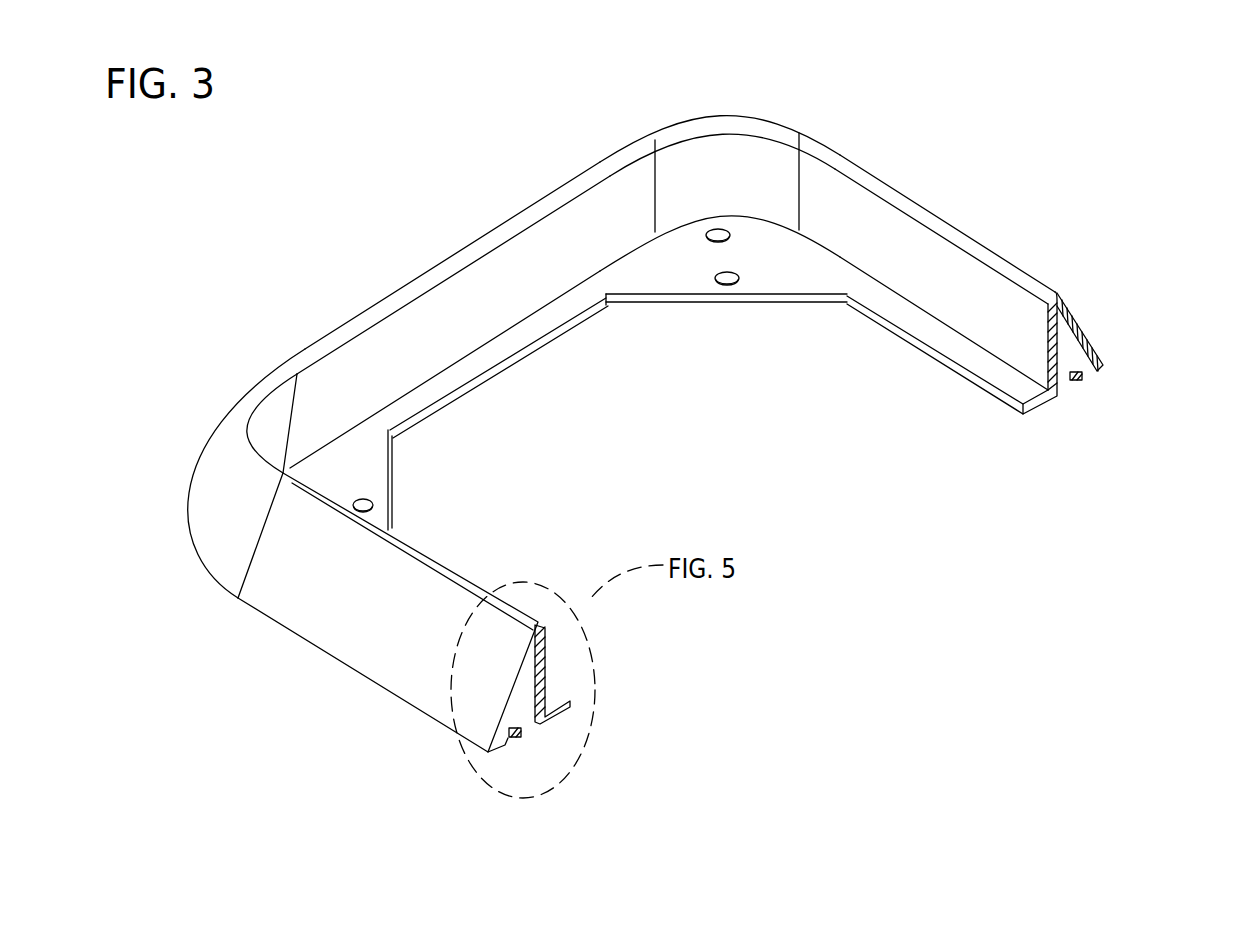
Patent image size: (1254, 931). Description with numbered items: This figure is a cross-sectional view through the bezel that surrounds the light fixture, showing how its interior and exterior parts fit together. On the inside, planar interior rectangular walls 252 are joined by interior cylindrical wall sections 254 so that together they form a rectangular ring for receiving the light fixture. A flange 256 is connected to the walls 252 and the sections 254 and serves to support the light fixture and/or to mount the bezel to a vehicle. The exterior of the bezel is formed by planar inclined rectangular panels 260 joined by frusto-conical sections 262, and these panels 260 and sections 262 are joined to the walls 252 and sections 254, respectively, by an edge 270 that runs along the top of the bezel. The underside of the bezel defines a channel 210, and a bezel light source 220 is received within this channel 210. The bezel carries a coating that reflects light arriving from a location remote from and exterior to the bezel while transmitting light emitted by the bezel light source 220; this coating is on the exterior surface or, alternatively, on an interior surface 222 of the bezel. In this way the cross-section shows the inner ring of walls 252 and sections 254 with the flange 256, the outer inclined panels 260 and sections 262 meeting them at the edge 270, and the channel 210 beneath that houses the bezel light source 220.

The channel 210 is at (1068, 335).
The bezel light source 220 is at (1079, 384).
The interior surface 222 is at (497, 748).
The planar interior rectangular walls 252 is at (512, 307).
The interior cylindrical wall sections 254 is at (748, 181).
The flange 256 is at (778, 268).
The planar inclined rectangular panels 260 is at (398, 624).
The frusto-conical sections 262 is at (247, 510).
The edge 270 is at (742, 120).